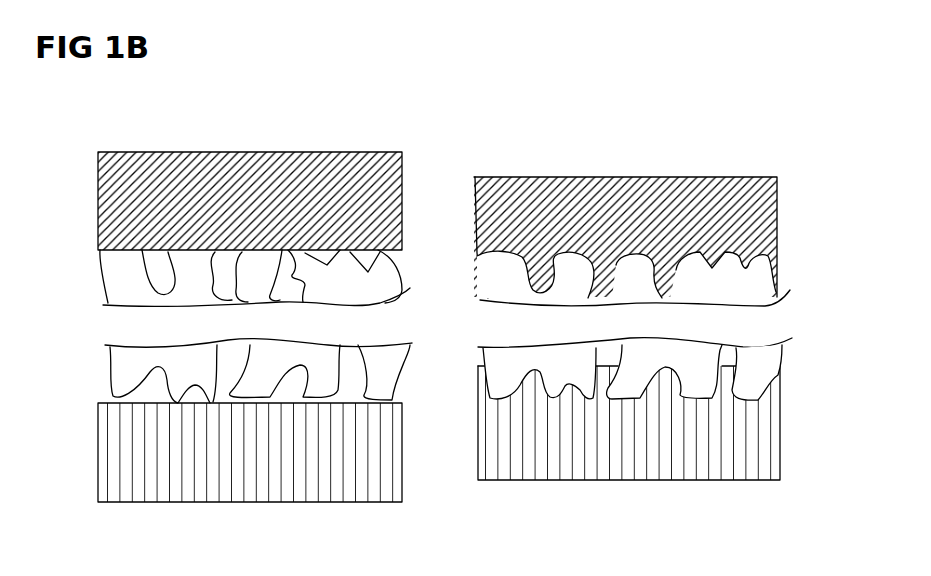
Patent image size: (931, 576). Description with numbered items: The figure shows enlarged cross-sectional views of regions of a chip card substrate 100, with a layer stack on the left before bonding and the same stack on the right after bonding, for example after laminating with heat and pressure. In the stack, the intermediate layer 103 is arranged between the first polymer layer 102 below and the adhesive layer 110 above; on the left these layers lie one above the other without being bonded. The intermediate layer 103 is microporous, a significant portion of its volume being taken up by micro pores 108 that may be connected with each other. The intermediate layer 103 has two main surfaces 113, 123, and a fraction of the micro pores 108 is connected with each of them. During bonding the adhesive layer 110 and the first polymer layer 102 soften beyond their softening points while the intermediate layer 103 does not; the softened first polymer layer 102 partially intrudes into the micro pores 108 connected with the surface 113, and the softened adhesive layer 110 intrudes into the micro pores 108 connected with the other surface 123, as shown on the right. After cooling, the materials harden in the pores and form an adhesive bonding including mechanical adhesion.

The chip card substrate 100 is at (777, 158).
The adhesive layer 110 is at (268, 166).
The main surface 123 is at (98, 250).
The micro pores 108 is at (166, 270).
The intermediate layer 103 is at (133, 313).
The main surface 113 is at (112, 395).
The first polymer layer 102 is at (112, 440).